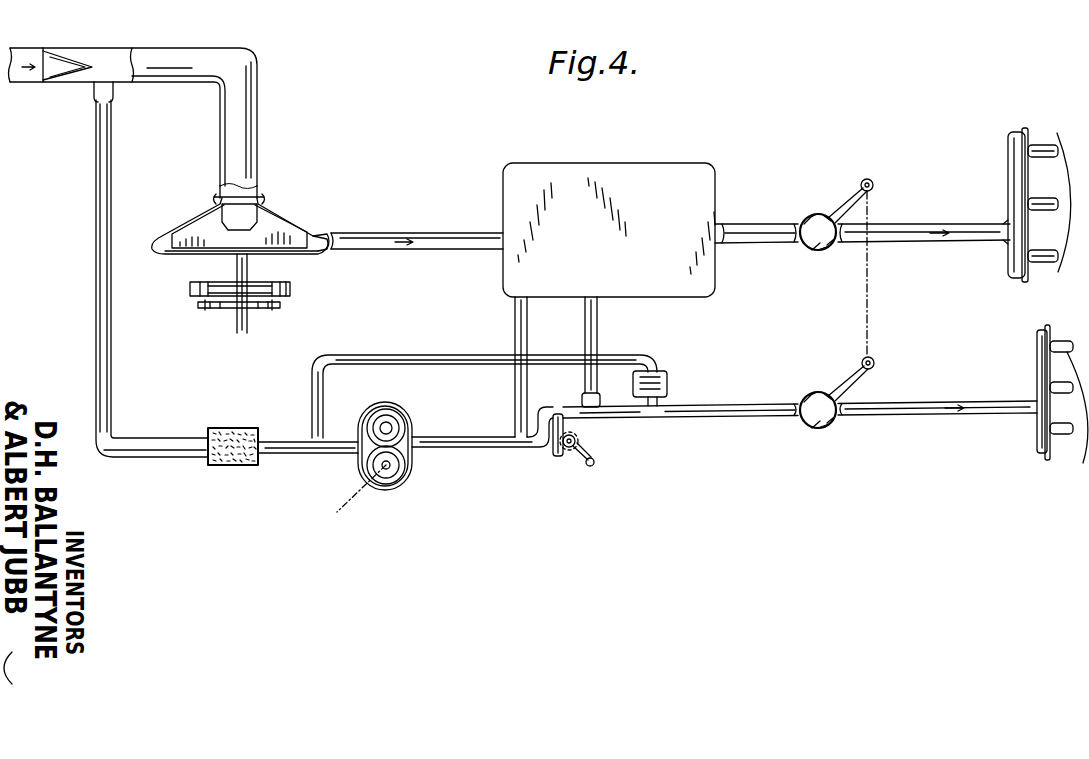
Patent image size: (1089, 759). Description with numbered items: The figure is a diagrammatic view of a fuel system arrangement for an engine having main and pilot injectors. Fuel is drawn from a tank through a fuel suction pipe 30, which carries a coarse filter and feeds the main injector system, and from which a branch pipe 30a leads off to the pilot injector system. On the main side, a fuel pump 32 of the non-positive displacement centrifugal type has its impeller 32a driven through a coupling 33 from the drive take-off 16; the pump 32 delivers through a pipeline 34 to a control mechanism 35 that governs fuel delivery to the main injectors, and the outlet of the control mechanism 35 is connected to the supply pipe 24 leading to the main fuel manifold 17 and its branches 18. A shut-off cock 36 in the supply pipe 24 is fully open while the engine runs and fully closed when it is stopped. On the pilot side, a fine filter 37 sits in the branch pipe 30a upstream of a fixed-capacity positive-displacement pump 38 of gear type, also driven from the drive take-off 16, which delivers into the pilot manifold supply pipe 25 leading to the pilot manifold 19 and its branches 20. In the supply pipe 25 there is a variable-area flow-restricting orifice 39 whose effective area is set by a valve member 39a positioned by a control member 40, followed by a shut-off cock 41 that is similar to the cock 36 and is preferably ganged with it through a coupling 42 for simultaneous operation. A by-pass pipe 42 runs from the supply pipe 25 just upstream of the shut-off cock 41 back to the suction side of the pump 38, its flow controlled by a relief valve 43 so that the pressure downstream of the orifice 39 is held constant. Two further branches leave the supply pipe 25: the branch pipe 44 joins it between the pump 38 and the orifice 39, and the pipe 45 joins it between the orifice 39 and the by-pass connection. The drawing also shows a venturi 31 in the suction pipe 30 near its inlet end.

The drive take-off 16 is at (236, 323).
The main fuel manifold 17 is at (1007, 152).
The branches 18 is at (1050, 145).
The second manifold 19 is at (1036, 352).
The second manifold branches 20 is at (1063, 436).
The supply pipe 24 is at (931, 223).
The pilot manifold supply pipe 25 is at (976, 416).
The fuel suction pipe 30 is at (27, 84).
The branch pipe 30a is at (94, 264).
The venturi 31 is at (58, 80).
The fuel pump 32 is at (281, 216).
The impeller 32a is at (302, 244).
The coupling 33 is at (188, 289).
The pipeline 34 is at (420, 232).
The control mechanism 35 is at (652, 163).
The shut-off cock 36 is at (809, 218).
The fine filter 37 is at (226, 466).
The fixed-capacity positive-displacement pump 38 is at (413, 469).
The variable-area flow-restricting orifice 39 is at (555, 414).
The valve member 39a is at (555, 455).
The control member 40 is at (577, 450).
The shut-off cock 41 is at (808, 425).
The by-pass pipe 42 is at (332, 357).
The relief valve 43 is at (661, 380).
The branch pipe 44 is at (514, 322).
The pipe 45 is at (599, 322).